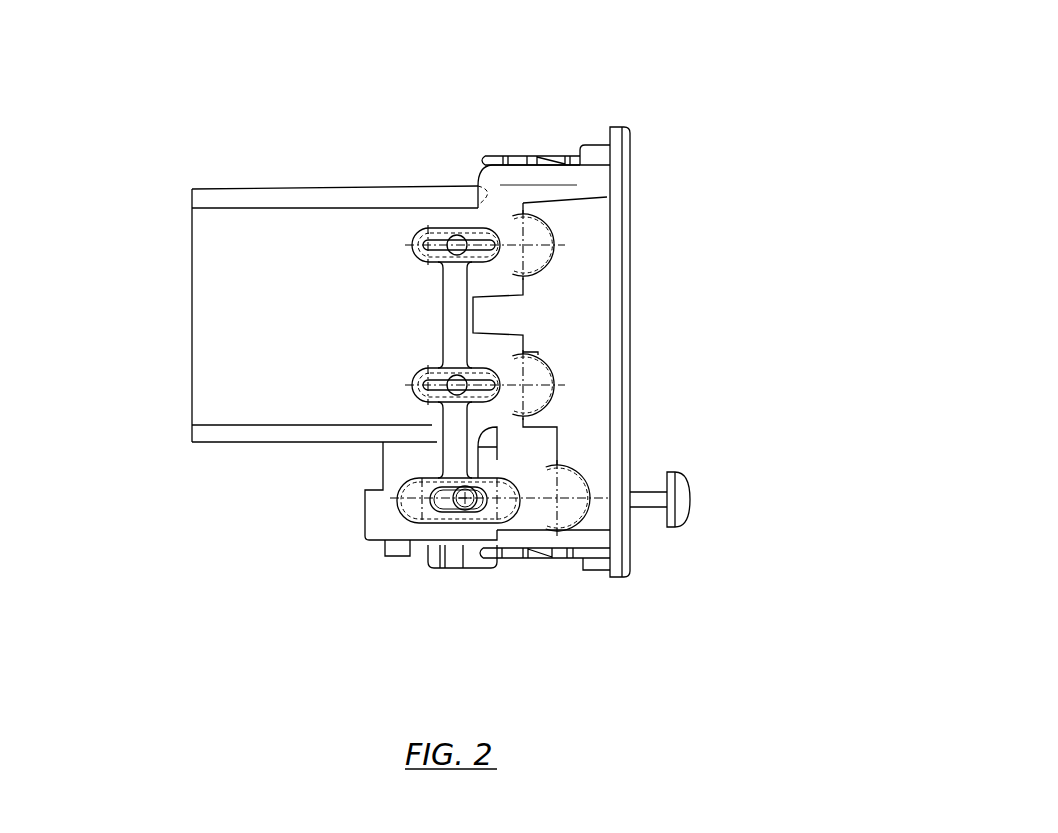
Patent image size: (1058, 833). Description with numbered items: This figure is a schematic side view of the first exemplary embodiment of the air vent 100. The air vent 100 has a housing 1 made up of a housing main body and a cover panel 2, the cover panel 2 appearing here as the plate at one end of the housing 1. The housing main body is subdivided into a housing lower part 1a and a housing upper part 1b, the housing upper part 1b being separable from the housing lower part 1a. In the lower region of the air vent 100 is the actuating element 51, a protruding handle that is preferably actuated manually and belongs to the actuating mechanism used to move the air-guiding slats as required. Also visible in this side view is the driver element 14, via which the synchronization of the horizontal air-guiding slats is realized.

The air vent 100 is at (318, 56).
The housing 1 is at (213, 300).
The housing lower part 1a is at (230, 430).
The housing upper part 1b is at (255, 200).
The cover panel 2 is at (617, 165).
The driver element 14 is at (423, 495).
The actuating element 51 is at (663, 498).